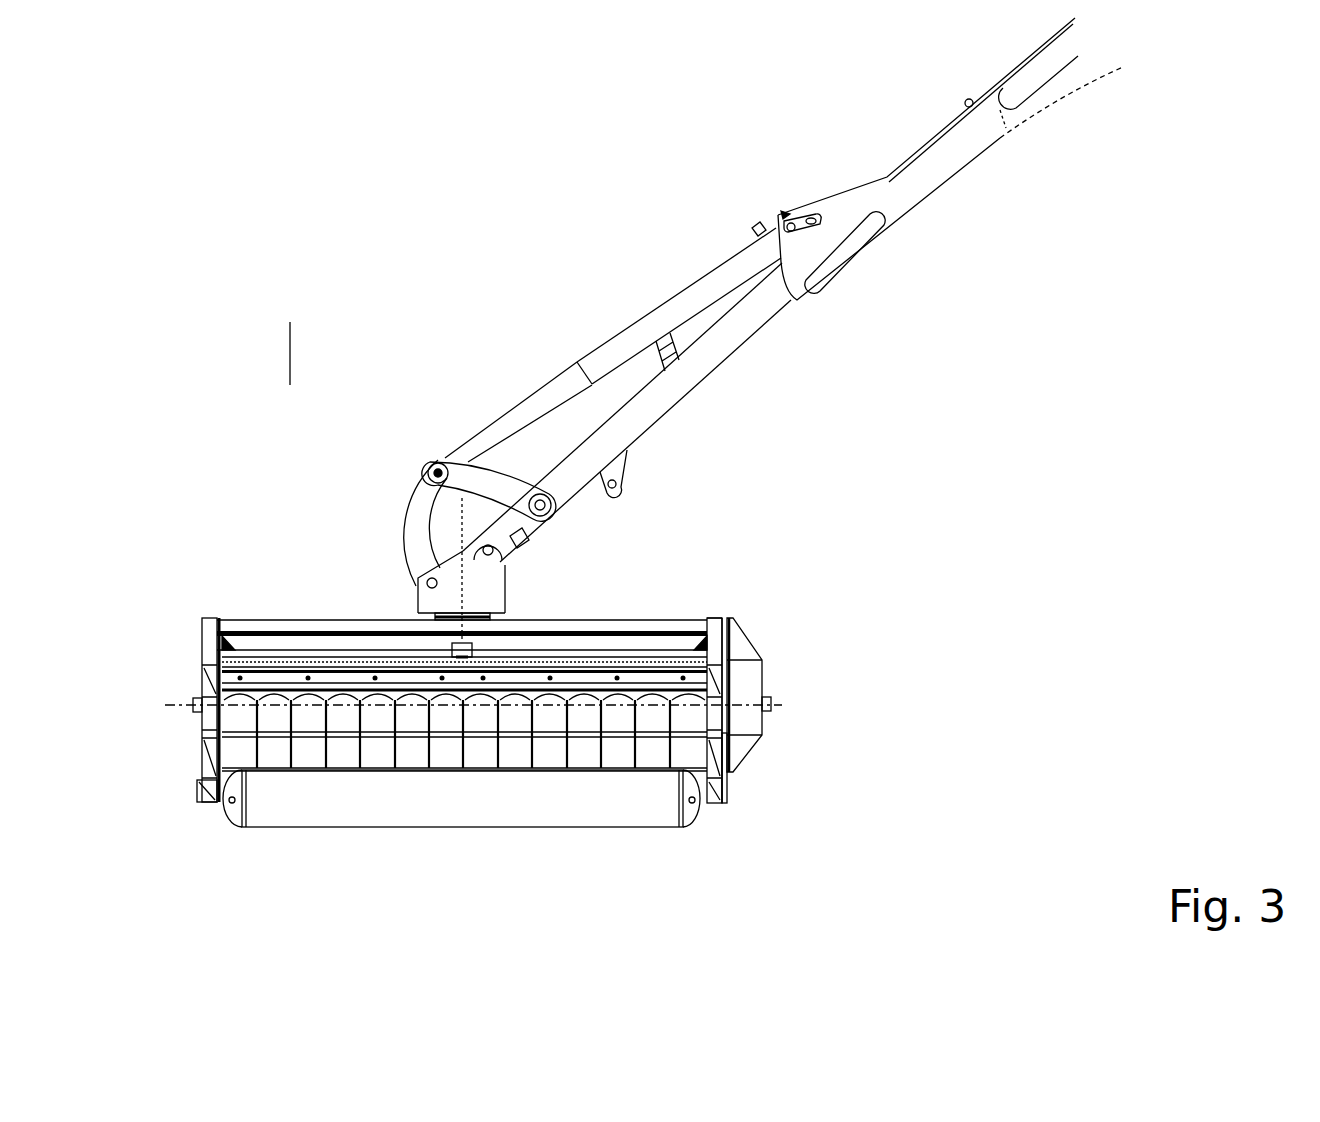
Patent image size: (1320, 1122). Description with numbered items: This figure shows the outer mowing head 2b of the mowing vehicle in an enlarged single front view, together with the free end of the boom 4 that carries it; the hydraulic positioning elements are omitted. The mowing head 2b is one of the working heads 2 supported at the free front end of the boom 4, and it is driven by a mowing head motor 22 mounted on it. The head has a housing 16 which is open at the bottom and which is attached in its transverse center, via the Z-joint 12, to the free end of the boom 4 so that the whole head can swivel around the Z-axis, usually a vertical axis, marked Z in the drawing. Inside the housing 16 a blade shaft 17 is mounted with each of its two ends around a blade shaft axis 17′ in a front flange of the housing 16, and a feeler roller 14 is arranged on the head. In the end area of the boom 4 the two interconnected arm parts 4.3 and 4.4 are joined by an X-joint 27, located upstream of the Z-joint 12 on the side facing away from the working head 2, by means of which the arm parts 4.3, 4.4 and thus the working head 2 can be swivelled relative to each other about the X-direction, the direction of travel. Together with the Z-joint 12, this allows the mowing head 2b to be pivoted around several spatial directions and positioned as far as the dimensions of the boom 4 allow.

The working head 2 is at (980, 672).
The mowing head 2b is at (295, 338).
The boom 4 is at (1000, 262).
The arm piece 4.3 is at (720, 360).
The arm piece 4.4 is at (488, 592).
The z-joint 12 is at (488, 608).
The feeler roller 14 is at (357, 813).
The housing 16 is at (716, 618).
The blade shaft 17 is at (193, 712).
The blade shaft axis 17′ is at (770, 703).
The mowing head motor 22 is at (745, 650).
The x-joint 27 is at (516, 547).
The vertical axis Z is at (462, 527).